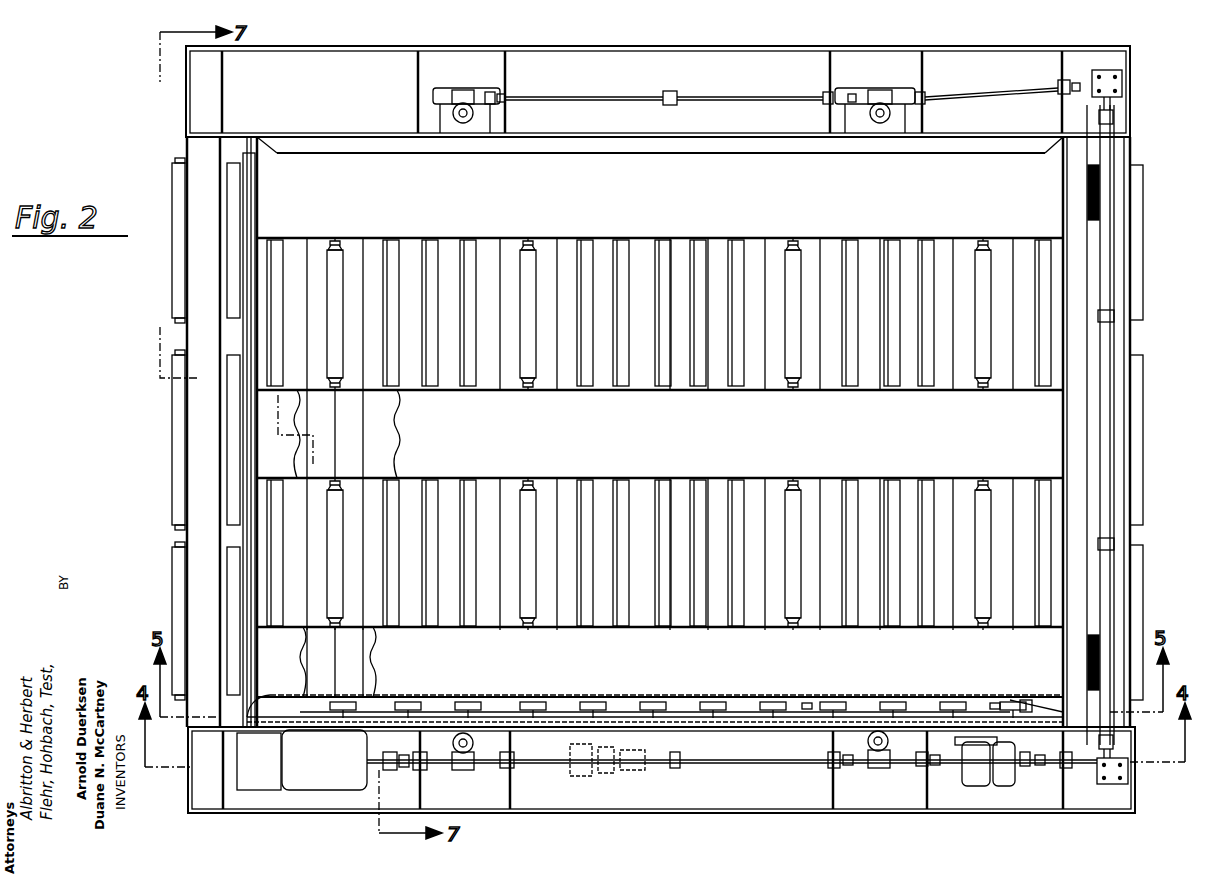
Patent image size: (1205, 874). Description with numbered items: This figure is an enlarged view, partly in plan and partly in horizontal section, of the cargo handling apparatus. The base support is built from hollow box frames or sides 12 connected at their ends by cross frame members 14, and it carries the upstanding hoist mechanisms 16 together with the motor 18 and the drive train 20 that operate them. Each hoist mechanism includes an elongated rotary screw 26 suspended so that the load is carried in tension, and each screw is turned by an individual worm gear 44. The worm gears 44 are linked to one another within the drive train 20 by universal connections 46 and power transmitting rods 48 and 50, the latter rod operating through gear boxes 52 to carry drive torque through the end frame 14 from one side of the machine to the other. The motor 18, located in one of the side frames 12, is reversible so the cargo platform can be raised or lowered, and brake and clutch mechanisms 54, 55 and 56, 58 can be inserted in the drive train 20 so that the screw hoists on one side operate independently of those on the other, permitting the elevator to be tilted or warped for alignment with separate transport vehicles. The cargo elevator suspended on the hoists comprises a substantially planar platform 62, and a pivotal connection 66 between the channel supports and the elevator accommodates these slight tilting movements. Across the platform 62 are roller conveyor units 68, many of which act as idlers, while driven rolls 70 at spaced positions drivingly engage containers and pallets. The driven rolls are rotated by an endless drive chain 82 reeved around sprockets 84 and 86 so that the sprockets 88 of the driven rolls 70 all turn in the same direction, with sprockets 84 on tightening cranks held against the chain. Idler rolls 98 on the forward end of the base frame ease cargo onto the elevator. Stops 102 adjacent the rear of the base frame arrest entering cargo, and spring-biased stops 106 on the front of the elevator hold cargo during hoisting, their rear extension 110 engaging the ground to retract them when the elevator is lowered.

The side box frame 12 is at (730, 47).
The cross frame member 14 is at (186, 266).
The hoist mechanism 16 is at (455, 75).
The motor 18 is at (328, 767).
The drive train 20 is at (731, 778).
The rotary screw 26 is at (463, 125).
The worm gear 44 is at (463, 90).
The universal connection 46 is at (500, 90).
The power transmitting rod 48 is at (760, 95).
The power transmitting rod 50 is at (1122, 440).
The gear box 52 is at (1124, 80).
The brake mechanism 54 is at (578, 776).
The brake mechanism 55 is at (612, 770).
The clutch mechanism 56 is at (975, 786).
The clutch mechanism 58 is at (1003, 786).
The platform 62 is at (700, 204).
The pivotal connection 66 is at (475, 712).
The roller conveyor unit 68 is at (465, 262).
The driven roll 70 is at (343, 262).
The endless drive chain 82 is at (945, 695).
The sprocket 84 is at (679, 695).
The sprocket 86 is at (1026, 698).
The sprocket 88 is at (807, 700).
The idler roll 98 is at (175, 293).
The cargo stop 102 is at (1088, 188).
The cargo stop 106 is at (240, 282).
The rear extension 110 is at (255, 172).